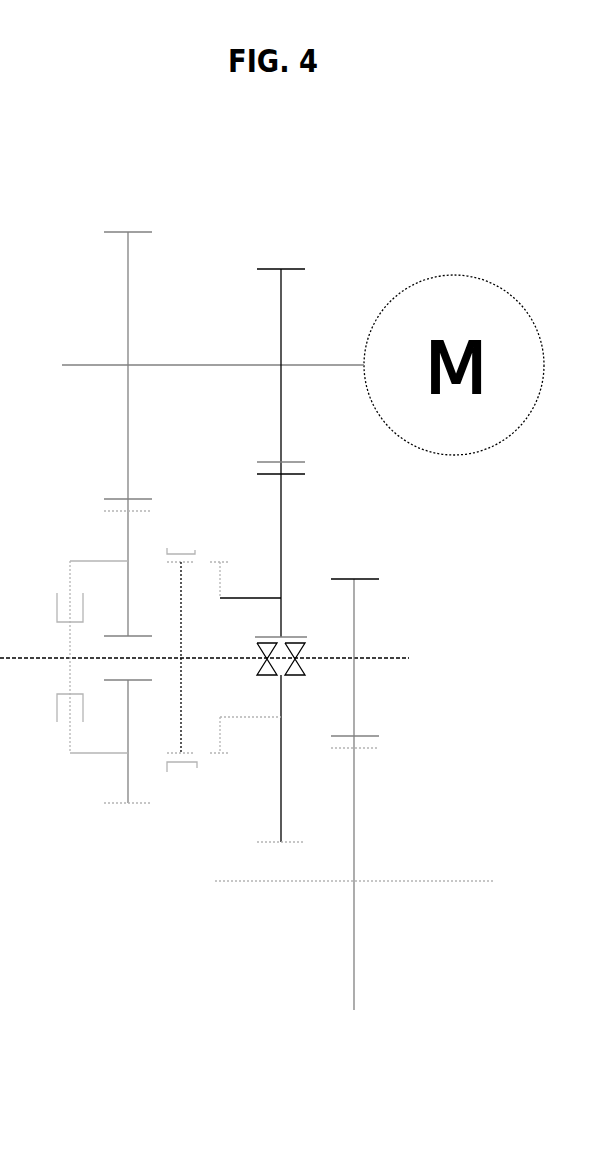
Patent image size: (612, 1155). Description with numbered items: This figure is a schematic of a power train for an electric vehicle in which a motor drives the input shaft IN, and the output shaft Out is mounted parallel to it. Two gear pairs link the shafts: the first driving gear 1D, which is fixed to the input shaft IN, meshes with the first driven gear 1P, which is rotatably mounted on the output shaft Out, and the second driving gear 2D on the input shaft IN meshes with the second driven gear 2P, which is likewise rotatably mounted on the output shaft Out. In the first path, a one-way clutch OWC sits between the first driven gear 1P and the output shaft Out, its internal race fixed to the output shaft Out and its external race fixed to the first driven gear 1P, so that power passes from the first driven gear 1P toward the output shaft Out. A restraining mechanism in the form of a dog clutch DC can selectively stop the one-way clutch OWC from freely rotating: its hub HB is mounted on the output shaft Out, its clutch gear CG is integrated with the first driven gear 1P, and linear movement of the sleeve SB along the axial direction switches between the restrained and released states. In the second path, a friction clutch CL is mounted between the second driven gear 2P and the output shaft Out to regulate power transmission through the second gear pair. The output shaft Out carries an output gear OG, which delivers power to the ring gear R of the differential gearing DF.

The second driving gear 2D is at (117, 231).
The first driving gear 1D is at (297, 268).
The input shaft IN is at (82, 366).
The friction clutch CL is at (65, 590).
The one-way clutch OWC is at (293, 633).
The output gear OG is at (365, 578).
The output shaft Out is at (388, 660).
The second driven gear 2P is at (113, 805).
The first driven gear 1P is at (272, 843).
The sleeve SB is at (168, 773).
The hub HB is at (182, 720).
The clutch gear CG is at (227, 755).
The dog clutch DC is at (201, 754).
The differential gearing DF is at (365, 889).
The ring gear R is at (362, 1012).